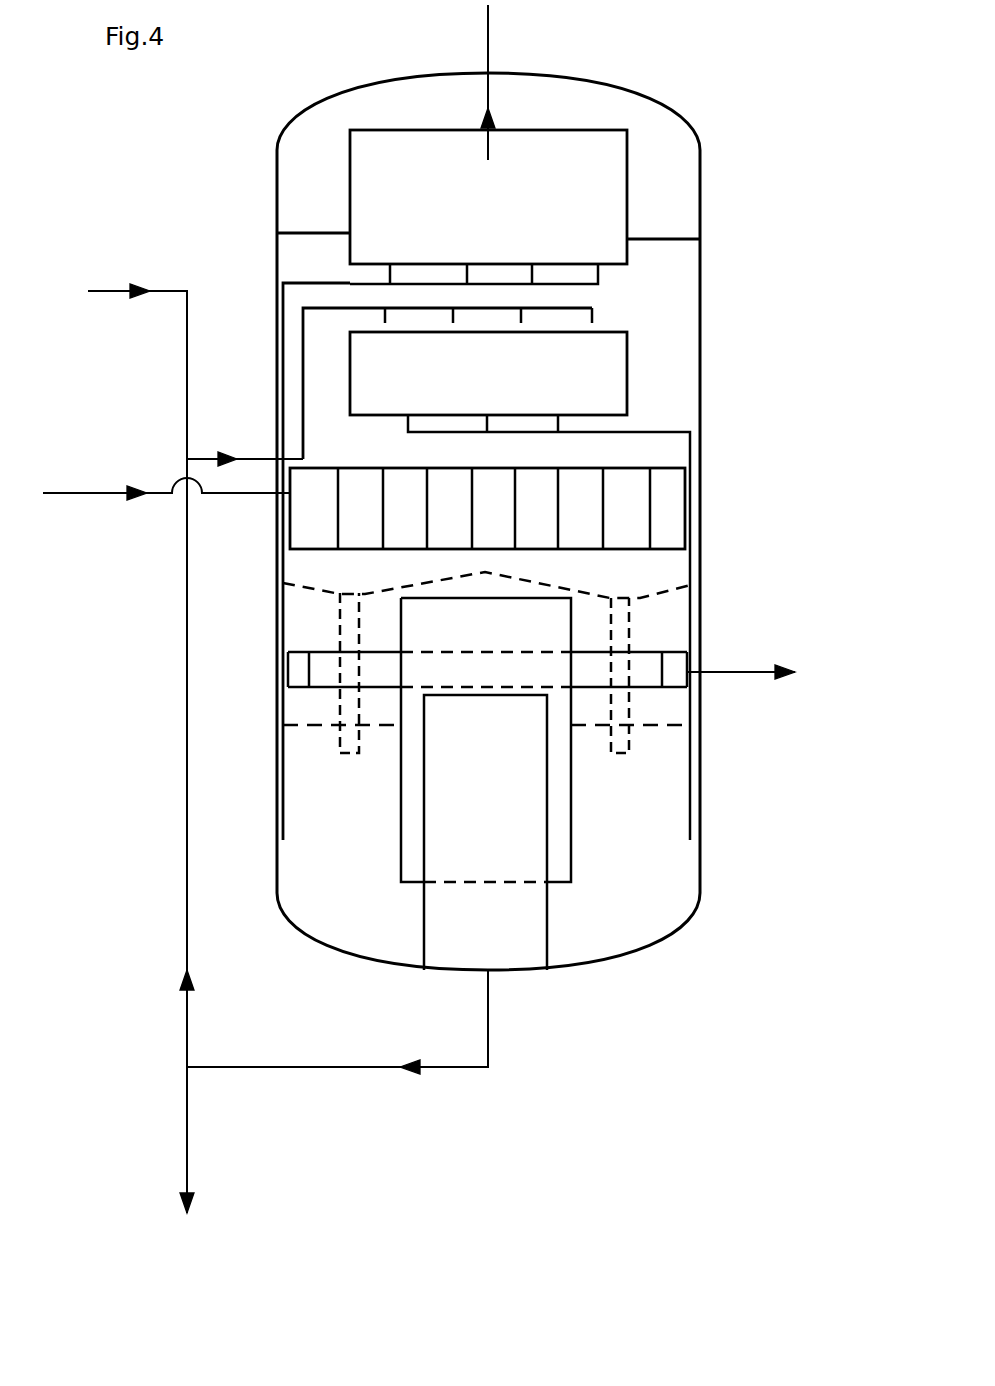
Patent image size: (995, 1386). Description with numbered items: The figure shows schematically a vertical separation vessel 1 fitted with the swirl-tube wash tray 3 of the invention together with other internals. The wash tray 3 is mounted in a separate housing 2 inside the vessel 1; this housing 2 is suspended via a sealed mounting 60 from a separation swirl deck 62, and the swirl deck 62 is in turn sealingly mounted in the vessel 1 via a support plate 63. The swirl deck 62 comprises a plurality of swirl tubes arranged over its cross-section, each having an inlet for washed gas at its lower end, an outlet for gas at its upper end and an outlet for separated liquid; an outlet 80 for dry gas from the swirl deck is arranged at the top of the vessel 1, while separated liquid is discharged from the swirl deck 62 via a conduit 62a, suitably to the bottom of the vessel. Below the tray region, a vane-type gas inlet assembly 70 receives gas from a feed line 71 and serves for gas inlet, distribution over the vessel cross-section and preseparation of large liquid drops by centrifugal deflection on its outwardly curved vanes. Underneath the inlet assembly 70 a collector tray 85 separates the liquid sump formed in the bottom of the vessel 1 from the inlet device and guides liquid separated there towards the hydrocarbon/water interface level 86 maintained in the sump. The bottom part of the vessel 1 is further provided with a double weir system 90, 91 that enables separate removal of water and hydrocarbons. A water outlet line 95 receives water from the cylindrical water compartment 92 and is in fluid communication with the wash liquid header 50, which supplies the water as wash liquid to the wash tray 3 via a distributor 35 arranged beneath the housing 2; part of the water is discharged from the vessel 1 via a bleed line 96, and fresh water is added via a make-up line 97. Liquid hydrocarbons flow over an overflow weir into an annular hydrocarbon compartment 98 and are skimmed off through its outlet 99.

The vertical vessel 1 is at (700, 115).
The housing 2 is at (557, 586).
The swirl-tube wash tray 3 is at (627, 366).
The distributor 35 is at (405, 419).
The wash liquid header 50 is at (583, 308).
The sealed mounting 60 is at (627, 280).
The separation swirl deck 62 is at (627, 167).
The conduit 62a is at (300, 281).
The support plate 63 is at (672, 243).
The gas inlet assembly 70 is at (668, 551).
The feed line 71 is at (254, 497).
The outlet for dry gas 80 is at (490, 45).
The collector tray 85 is at (655, 595).
The hydrocarbon/water interface level 86 is at (665, 727).
The double weir system 90 is at (571, 866).
The double weir system 91 is at (547, 930).
The cylindrical water compartment 92 is at (497, 939).
The water outlet line 95 is at (489, 1030).
The bleed line 96 is at (188, 1148).
The make-up line 97 is at (168, 288).
The annular hydrocarbon compartment 98 is at (676, 675).
The outlet 99 is at (718, 668).